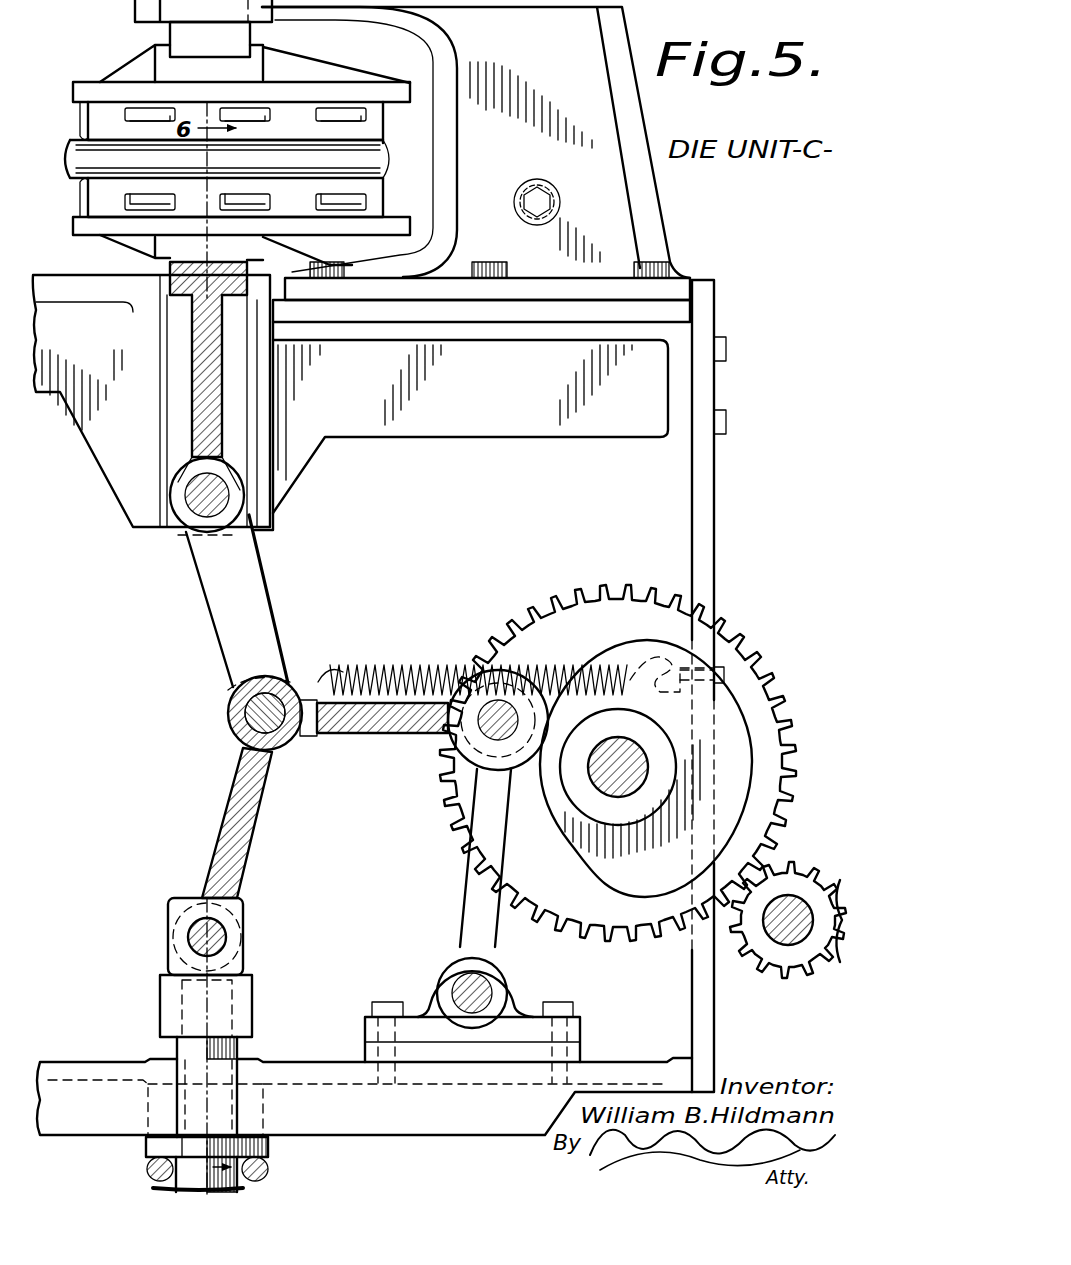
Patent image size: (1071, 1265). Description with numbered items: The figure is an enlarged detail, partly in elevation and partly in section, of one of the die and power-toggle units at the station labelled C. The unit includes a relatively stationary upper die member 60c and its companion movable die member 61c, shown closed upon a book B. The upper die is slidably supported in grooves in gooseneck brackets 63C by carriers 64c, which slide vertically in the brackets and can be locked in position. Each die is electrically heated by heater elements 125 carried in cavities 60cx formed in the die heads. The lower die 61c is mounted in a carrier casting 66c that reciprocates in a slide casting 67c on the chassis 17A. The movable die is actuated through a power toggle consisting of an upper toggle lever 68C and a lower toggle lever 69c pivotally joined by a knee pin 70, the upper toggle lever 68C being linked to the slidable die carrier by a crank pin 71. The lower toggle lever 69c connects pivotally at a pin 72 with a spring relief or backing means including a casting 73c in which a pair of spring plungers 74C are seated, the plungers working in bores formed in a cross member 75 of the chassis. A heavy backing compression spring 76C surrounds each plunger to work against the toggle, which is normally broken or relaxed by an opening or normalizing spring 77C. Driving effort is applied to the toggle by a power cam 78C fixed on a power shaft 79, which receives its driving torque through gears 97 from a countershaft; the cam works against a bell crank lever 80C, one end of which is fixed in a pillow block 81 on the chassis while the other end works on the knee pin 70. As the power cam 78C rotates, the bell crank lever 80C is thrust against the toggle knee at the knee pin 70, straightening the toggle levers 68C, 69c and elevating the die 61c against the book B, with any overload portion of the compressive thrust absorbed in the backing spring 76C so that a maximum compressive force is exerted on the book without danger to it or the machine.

The gooseneck brackets 63C is at (534, 56).
The carriers 64c is at (237, 37).
The upper die member 60c is at (95, 112).
The movable die member 61c is at (90, 195).
The cavities 60cx is at (342, 110).
The book B is at (227, 159).
The heater elements 125 is at (372, 202).
The chassis 17A is at (716, 521).
The slide casting 67c is at (183, 383).
The carrier casting 66c is at (220, 353).
The crank pin 71 is at (195, 512).
The upper toggle lever 68C is at (250, 597).
The knee pin 70 is at (247, 722).
The lower toggle lever 69c is at (255, 830).
The opening or normalizing spring 77C is at (403, 683).
The bell crank lever 80C is at (488, 795).
The power cam 78C is at (623, 843).
The power shaft 79 is at (603, 773).
The pin 72 is at (220, 933).
The casting 73c is at (243, 993).
The spring plungers 74C is at (238, 1050).
The cross member 75 is at (143, 1070).
The backing compression spring 76C is at (272, 1168).
The pillow block 81 is at (520, 1007).
The gears 97 is at (732, 942).